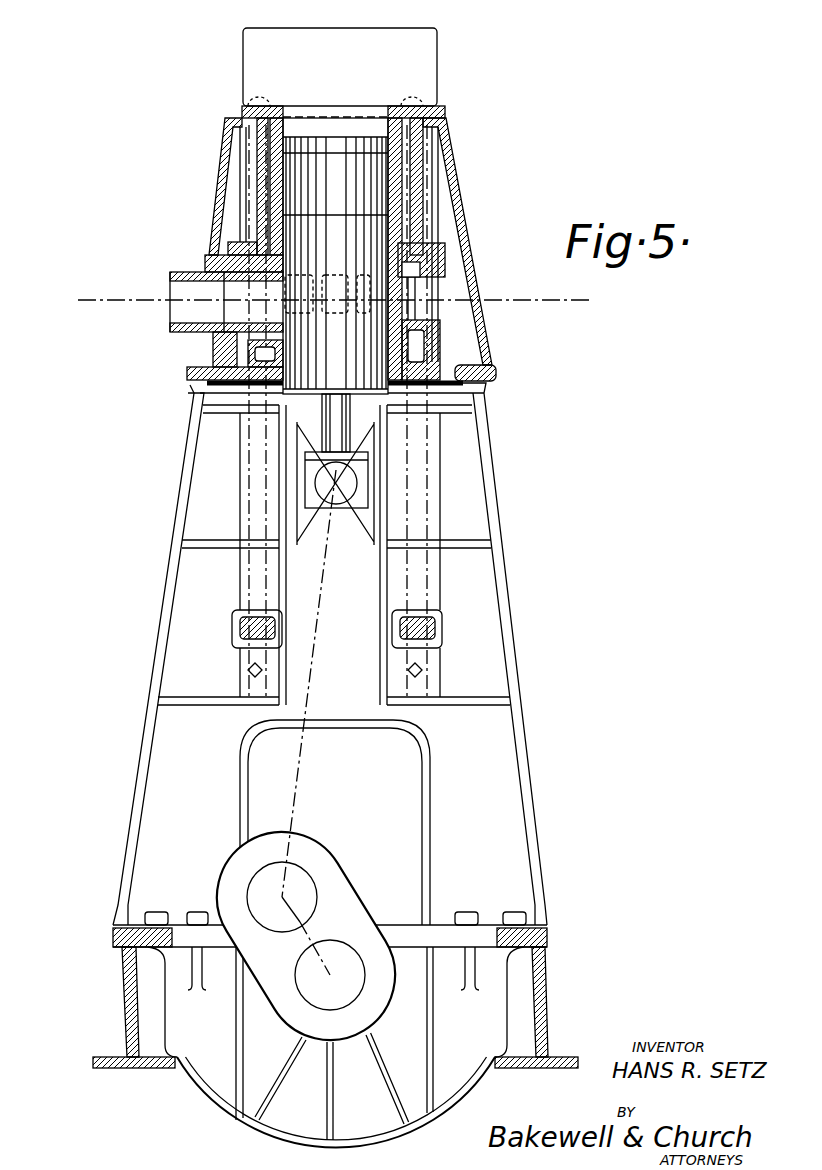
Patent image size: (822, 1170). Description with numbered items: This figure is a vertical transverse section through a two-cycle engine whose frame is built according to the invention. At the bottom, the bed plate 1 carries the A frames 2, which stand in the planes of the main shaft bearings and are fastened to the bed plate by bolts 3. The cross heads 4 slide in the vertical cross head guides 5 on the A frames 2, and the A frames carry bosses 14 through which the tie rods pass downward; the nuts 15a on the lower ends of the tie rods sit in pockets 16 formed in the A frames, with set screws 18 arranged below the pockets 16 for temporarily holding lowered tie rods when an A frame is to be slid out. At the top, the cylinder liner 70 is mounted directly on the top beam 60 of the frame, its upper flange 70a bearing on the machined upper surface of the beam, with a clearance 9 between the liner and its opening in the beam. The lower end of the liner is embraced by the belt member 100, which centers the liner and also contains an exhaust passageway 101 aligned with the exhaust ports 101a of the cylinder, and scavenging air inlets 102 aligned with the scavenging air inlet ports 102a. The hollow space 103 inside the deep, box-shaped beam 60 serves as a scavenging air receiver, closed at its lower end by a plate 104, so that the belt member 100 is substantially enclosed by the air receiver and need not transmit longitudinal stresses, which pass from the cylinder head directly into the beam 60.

The bed plate 1 is at (122, 1000).
The A frames 2 is at (484, 625).
The bolts 3 is at (150, 919).
The cross heads 4 is at (320, 304).
The cross head guides 5 is at (378, 665).
The clearance 9 is at (410, 156).
The bosses 14 is at (258, 586).
The nuts 15a is at (420, 628).
The pockets 16 is at (438, 648).
The set screws 18 is at (412, 676).
The top beam 60 is at (212, 180).
The cylinder liner 70 is at (286, 130).
The flange 70a is at (244, 110).
The belt member 100 is at (428, 337).
The exhaust passageway 101 is at (238, 293).
The exhaust ports 101a is at (292, 298).
The scavenging air inlets 102 is at (418, 294).
The scavenging air inlet ports 102a is at (395, 307).
The hollow space 103 is at (463, 356).
The plate 104 is at (455, 386).